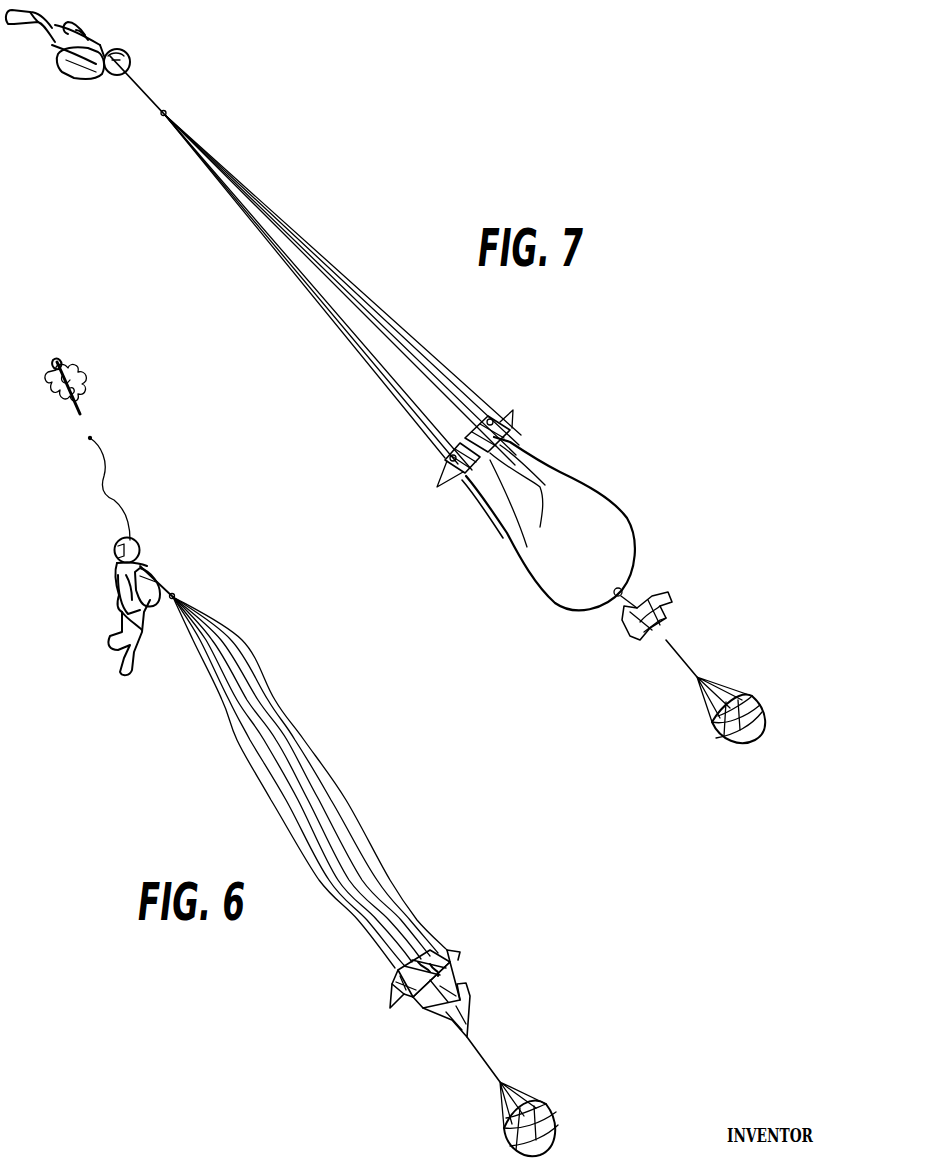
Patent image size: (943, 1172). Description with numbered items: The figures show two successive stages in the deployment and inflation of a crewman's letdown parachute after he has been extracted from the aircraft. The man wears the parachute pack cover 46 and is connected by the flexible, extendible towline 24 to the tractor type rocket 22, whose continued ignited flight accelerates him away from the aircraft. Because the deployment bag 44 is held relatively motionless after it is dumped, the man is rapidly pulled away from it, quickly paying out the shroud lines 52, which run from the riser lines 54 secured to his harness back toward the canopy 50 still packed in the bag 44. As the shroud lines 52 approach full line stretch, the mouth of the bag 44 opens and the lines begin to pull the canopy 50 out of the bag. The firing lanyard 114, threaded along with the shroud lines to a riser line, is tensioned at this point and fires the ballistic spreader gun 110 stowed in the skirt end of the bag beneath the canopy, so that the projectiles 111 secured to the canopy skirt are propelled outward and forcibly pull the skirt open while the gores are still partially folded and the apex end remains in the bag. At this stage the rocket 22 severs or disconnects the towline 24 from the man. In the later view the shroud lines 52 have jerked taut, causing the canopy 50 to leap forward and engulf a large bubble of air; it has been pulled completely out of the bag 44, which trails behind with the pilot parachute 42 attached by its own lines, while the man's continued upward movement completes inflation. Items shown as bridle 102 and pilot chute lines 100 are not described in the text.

In FIG. 6, the tractor type rocket 22 is at (85, 400).
In FIG. 6, the towline 24 is at (118, 495).
In FIG. 7, the pilot parachute 42 is at (763, 723).
In FIG. 6, the pilot parachute 42 is at (552, 1112).
In FIG. 7, the parachute canopy deployment bag 44 is at (660, 612).
In FIG. 6, the parachute canopy deployment bag 44 is at (467, 1011).
In FIG. 7, the parachute pack cover 46 is at (80, 74).
In FIG. 6, the parachute pack cover 46 is at (158, 604).
In FIG. 7, the canopy 50 is at (579, 497).
In FIG. 6, the canopy 50 is at (428, 1010).
In FIG. 7, the shroud lines 52 is at (368, 289).
In FIG. 6, the shroud lines 52 is at (314, 738).
In FIG. 7, the riser lines 54 is at (151, 104).
In FIG. 6, the riser lines 54 is at (162, 585).
In FIG. 7, the pilot chute shroud lines 100 is at (722, 684).
In FIG. 6, the pilot chute shroud lines 100 is at (506, 1109).
In FIG. 7, the pilot chute bridle 102 is at (677, 659).
In FIG. 6, the pilot chute bridle 102 is at (487, 1059).
In FIG. 6, the ballistic parachute canopy spreader gun 110 is at (398, 972).
In FIG. 7, the projectiles 111 is at (508, 413).
In FIG. 6, the projectiles 111 is at (450, 958).
In FIG. 6, the firing lanyard 114 is at (420, 950).